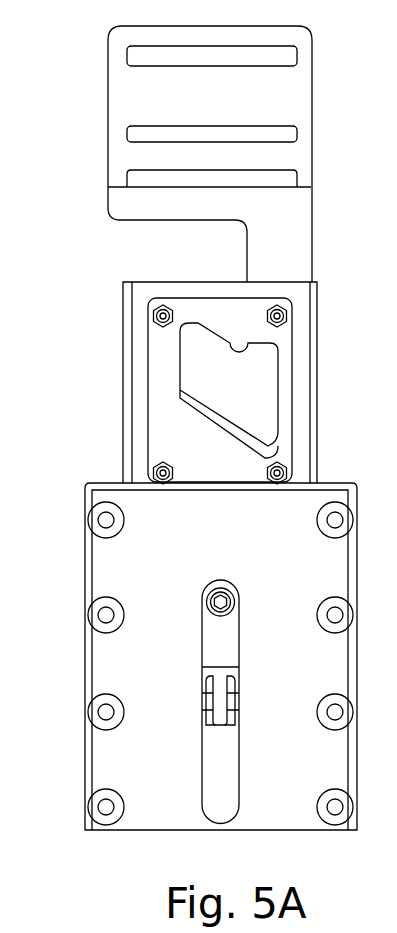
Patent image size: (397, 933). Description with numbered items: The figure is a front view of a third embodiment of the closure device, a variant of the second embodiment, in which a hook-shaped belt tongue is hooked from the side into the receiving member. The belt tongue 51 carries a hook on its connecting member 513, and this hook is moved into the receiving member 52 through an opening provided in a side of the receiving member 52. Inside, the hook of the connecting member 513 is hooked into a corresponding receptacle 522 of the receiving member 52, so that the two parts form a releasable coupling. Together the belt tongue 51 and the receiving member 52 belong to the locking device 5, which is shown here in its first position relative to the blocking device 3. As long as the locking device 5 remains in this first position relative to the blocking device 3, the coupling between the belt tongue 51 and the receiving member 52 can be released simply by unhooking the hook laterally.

The locking device 5 is at (209, 255).
The belt tongue 51 is at (128, 91).
The receiving member 52 is at (123, 338).
The receptacle 522 is at (190, 323).
The connecting member 513 is at (248, 382).
The blocking device 3 is at (113, 568).